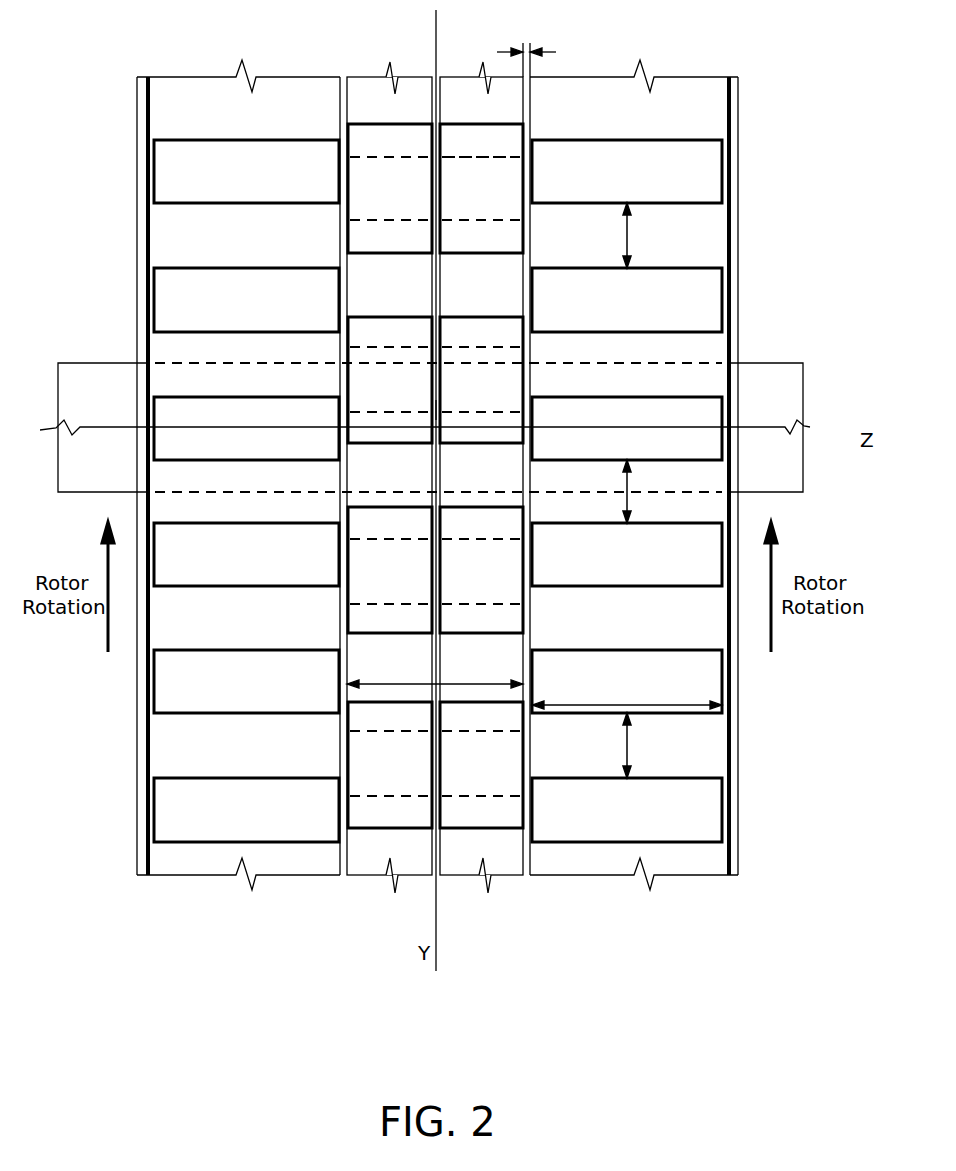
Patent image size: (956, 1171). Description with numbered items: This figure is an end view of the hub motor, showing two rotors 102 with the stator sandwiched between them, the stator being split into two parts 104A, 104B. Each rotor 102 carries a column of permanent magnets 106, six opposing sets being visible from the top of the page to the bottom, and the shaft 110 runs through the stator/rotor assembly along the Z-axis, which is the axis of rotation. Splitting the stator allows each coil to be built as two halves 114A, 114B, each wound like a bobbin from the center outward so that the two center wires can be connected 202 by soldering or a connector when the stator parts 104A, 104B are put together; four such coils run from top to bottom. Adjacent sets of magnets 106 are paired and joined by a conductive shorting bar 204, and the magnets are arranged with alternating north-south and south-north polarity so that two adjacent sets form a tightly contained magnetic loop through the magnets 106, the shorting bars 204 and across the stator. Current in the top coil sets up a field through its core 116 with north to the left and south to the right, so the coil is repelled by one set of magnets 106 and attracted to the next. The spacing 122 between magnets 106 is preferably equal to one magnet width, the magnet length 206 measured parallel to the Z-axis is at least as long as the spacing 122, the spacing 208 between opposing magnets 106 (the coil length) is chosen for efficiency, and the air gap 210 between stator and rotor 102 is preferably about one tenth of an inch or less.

The rotor 102 is at (137, 81).
The first stator part 104A is at (357, 77).
The second stator part 104B is at (467, 77).
The permanent magnet 106 is at (284, 124).
The shaft 110 is at (86, 363).
The first coil half 114A is at (388, 231).
The second coil half 114B is at (478, 231).
The core 116 is at (480, 157).
The spacing between magnets 122 is at (646, 490).
The center wire connection 202 is at (436, 408).
The shorting bar 204 is at (150, 232).
The length of the magnets 206 is at (627, 695).
The spacing between opposing magnets 208 is at (435, 672).
The air gap 210 is at (526, 37).